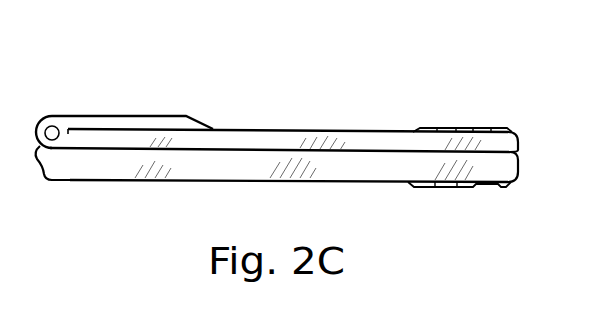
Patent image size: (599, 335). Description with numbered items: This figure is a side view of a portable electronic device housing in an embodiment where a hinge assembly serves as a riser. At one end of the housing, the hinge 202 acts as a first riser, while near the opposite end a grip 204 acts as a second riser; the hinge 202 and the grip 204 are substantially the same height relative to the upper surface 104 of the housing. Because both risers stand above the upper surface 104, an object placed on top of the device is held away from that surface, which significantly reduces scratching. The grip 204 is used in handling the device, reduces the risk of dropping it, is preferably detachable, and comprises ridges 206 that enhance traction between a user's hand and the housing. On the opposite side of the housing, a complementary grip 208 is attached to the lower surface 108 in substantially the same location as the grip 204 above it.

The upper surface 104 is at (277, 137).
The lower surface 108 is at (375, 181).
The hinge 202 is at (88, 117).
The grip 204 is at (432, 128).
The ridges 206 is at (473, 129).
The complementary grip 208 is at (460, 189).